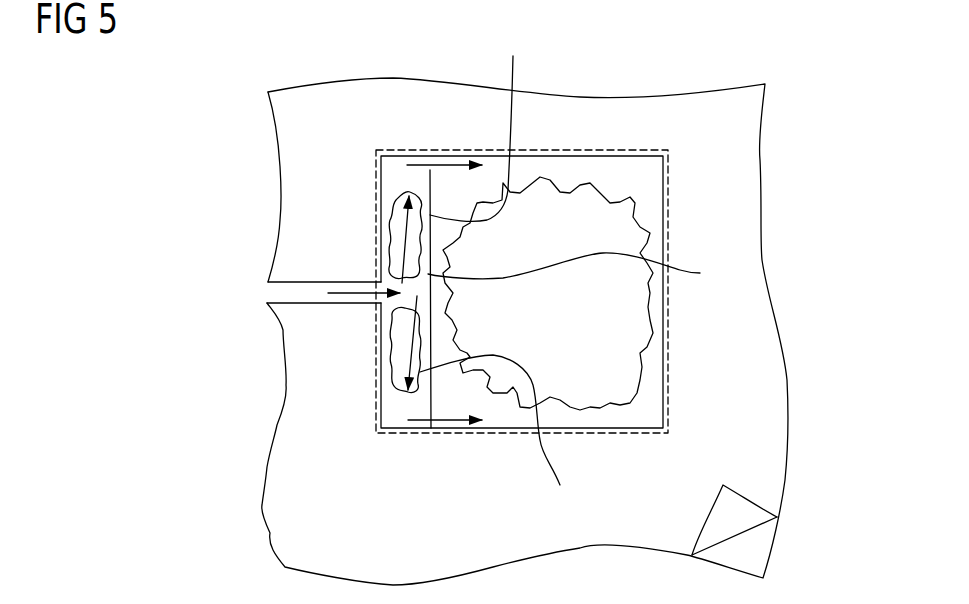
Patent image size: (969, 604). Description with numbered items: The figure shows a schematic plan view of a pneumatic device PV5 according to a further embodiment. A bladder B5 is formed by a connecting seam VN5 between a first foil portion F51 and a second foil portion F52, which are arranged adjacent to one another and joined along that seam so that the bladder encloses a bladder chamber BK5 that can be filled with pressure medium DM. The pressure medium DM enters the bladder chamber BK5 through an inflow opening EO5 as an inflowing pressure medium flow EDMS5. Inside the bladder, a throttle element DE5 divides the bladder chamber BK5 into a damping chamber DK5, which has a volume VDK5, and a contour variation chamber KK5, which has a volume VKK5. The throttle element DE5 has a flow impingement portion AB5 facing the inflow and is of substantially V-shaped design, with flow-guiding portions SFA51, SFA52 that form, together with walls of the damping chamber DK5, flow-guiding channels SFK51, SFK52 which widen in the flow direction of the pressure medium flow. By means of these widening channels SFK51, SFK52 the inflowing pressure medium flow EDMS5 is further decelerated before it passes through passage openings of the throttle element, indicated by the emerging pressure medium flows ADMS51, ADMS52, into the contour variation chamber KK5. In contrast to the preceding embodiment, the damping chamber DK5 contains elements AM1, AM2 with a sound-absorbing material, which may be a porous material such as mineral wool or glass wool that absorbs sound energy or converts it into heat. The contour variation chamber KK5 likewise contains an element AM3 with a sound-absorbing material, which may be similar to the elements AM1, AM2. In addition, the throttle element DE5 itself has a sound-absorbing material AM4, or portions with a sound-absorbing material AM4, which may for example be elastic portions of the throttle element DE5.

The pneumatic device PV5 is at (245, 77).
The connecting seam VN5 is at (667, 185).
The bladder B5 is at (680, 237).
The pressure medium flow flowing in EDMS5 is at (342, 303).
The pressure medium DM is at (272, 293).
The flow-guiding portion SFA51 is at (428, 180).
The flow-guiding channel SFK51 is at (387, 210).
The element with sound-absorbing material AM1 is at (390, 232).
The inflow opening EO5 is at (377, 287).
The flow impingement portion AB5 is at (418, 293).
The element with sound-absorbing material AM2 is at (387, 359).
The volume of the damping chamber VDK5 is at (387, 377).
The flow-guiding channel SFK52 is at (383, 386).
The flow-guiding portion SFA52 is at (424, 405).
The emerging pressure medium flow ADMS51 is at (448, 172).
The emerging pressure medium flow ADMS52 is at (453, 413).
The sound-absorbing material AM4 is at (513, 271).
The element with sound-absorbing material AM3 is at (575, 188).
The bladder chamber BK5 is at (607, 297).
The throttle element DE5 is at (588, 271).
The volume of the contour variation chamber VKK5 is at (643, 395).
The damping chamber DK5 is at (397, 435).
The contour variation chamber KK5 is at (647, 435).
The second foil portion F52 is at (733, 508).
The first foil portion F51 is at (758, 550).